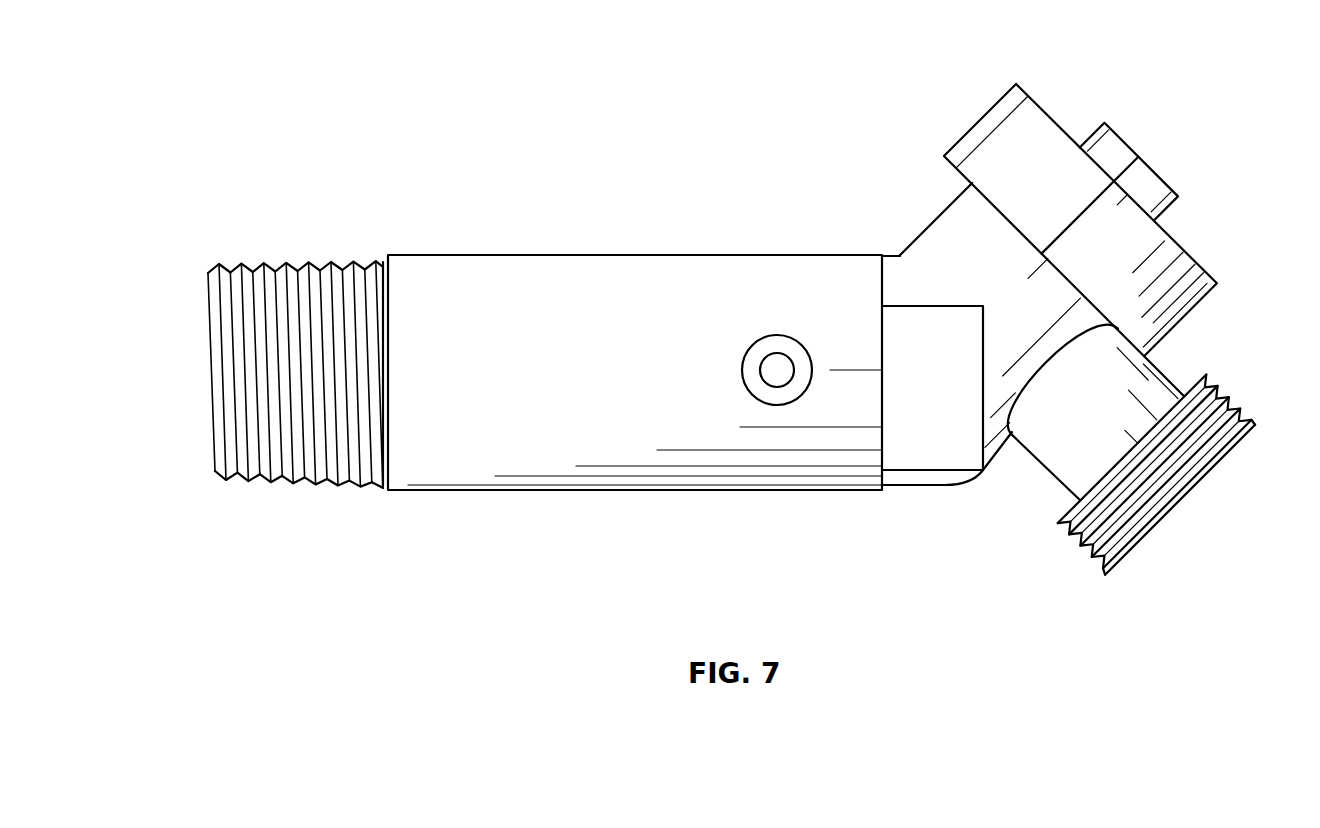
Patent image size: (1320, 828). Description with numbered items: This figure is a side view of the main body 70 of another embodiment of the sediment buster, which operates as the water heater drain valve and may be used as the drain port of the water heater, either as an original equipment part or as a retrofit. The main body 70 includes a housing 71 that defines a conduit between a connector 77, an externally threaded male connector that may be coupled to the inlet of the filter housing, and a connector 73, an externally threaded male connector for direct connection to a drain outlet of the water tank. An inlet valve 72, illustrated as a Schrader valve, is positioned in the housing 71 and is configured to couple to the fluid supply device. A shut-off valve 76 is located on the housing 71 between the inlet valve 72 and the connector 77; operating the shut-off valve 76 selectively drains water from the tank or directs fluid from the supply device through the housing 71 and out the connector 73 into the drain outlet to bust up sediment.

The main body 70 is at (218, 93).
The housing 71 is at (505, 280).
The inlet valve 72 is at (777, 411).
The connector 73 is at (294, 490).
The shut-off valve 76 is at (1152, 184).
The connector 77 is at (1183, 497).